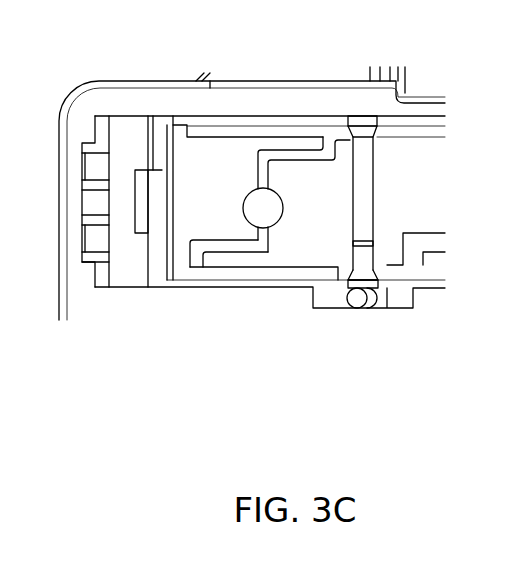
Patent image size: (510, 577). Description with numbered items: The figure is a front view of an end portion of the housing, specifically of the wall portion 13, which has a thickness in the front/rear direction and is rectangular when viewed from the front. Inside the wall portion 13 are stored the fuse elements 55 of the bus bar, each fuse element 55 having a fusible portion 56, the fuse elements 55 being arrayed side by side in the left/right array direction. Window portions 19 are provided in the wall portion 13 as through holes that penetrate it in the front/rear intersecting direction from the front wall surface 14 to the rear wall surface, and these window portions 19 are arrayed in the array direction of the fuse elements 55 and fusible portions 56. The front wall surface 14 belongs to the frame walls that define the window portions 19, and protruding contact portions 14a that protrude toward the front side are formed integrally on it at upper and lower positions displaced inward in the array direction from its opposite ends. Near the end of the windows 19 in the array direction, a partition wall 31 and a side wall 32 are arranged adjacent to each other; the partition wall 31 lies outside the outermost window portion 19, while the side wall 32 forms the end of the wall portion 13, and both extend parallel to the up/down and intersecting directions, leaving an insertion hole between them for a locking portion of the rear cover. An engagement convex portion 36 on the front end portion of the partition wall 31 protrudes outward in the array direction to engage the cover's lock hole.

The wall portion 13 is at (60, 203).
The front wall surface 14 is at (230, 116).
The protruding contact portion 14a is at (363, 123).
The window portion 19 is at (303, 182).
The partition wall 31 is at (158, 268).
The side wall 32 is at (80, 273).
The engagement convex portion 36 is at (140, 180).
The fuse element 55 is at (223, 248).
The fusible portion 56 is at (263, 168).